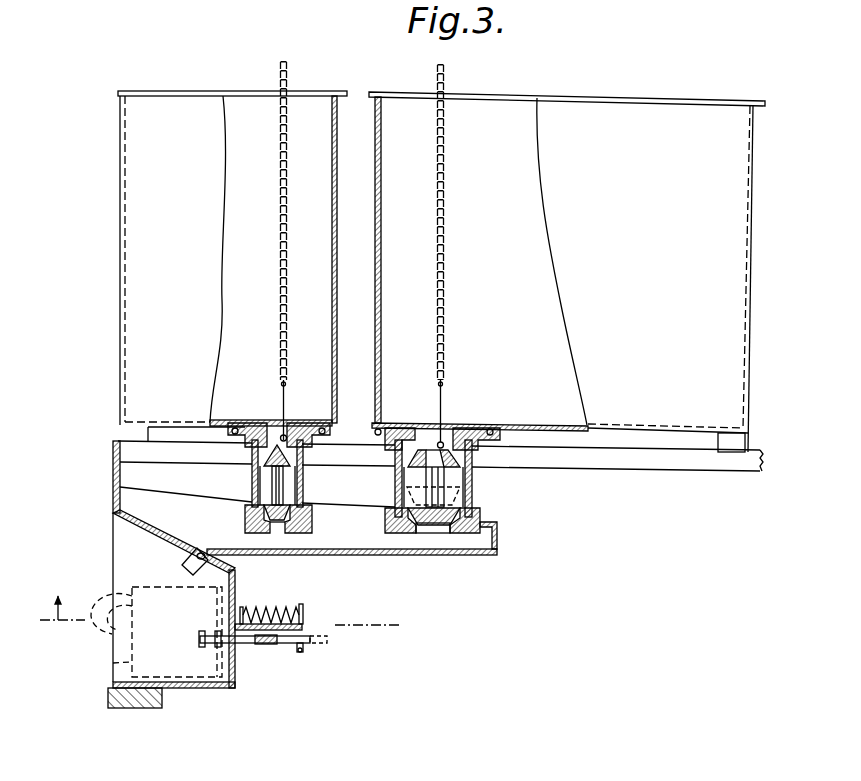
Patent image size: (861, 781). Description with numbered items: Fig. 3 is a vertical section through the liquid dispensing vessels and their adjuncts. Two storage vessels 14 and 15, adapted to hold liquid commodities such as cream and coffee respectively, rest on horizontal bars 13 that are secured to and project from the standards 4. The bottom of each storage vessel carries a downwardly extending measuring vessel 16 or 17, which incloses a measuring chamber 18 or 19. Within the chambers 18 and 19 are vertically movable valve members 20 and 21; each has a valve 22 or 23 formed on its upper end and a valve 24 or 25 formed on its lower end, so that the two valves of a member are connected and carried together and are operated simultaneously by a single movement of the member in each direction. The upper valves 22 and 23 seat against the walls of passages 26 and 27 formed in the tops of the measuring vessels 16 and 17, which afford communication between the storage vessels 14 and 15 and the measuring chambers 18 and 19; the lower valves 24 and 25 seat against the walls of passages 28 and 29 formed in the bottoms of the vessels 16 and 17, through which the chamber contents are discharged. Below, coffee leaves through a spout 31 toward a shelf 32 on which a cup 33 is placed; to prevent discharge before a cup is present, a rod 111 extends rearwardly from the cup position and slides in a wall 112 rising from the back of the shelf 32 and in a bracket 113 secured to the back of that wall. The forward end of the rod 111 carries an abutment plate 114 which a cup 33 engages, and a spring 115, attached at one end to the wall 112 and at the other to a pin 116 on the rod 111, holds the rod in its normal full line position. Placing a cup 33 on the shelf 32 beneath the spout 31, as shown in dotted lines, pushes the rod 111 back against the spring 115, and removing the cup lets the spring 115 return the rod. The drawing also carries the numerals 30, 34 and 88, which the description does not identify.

The standards 4 is at (229, 615).
The horizontal bars 13 is at (652, 460).
The storage vessel 14 is at (180, 100).
The storage vessel 15 is at (636, 105).
The measuring vessel 16 is at (256, 486).
The measuring vessel 17 is at (474, 497).
The measuring chamber 18 is at (294, 490).
The measuring chamber 19 is at (400, 480).
The valve member 20 is at (284, 477).
The valve member 21 is at (446, 480).
The valve 22 is at (268, 457).
The valve 23 is at (455, 465).
The valve 24 is at (272, 514).
The valve 25 is at (390, 525).
The passage 26 is at (286, 432).
The passage 27 is at (446, 432).
The passage 28 is at (280, 534).
The passage 29 is at (448, 534).
The chute 30 is at (328, 556).
The spout 31 is at (183, 562).
The shelf 32 is at (208, 690).
The cup 33 is at (128, 663).
The chain 34 is at (279, 303).
The frame plate 88 is at (117, 466).
The rod 111 is at (295, 646).
The wall 112 is at (233, 676).
The bracket 113 is at (303, 651).
The abutment plate 114 is at (199, 638).
The spring 115 is at (282, 611).
The pin 116 is at (265, 645).